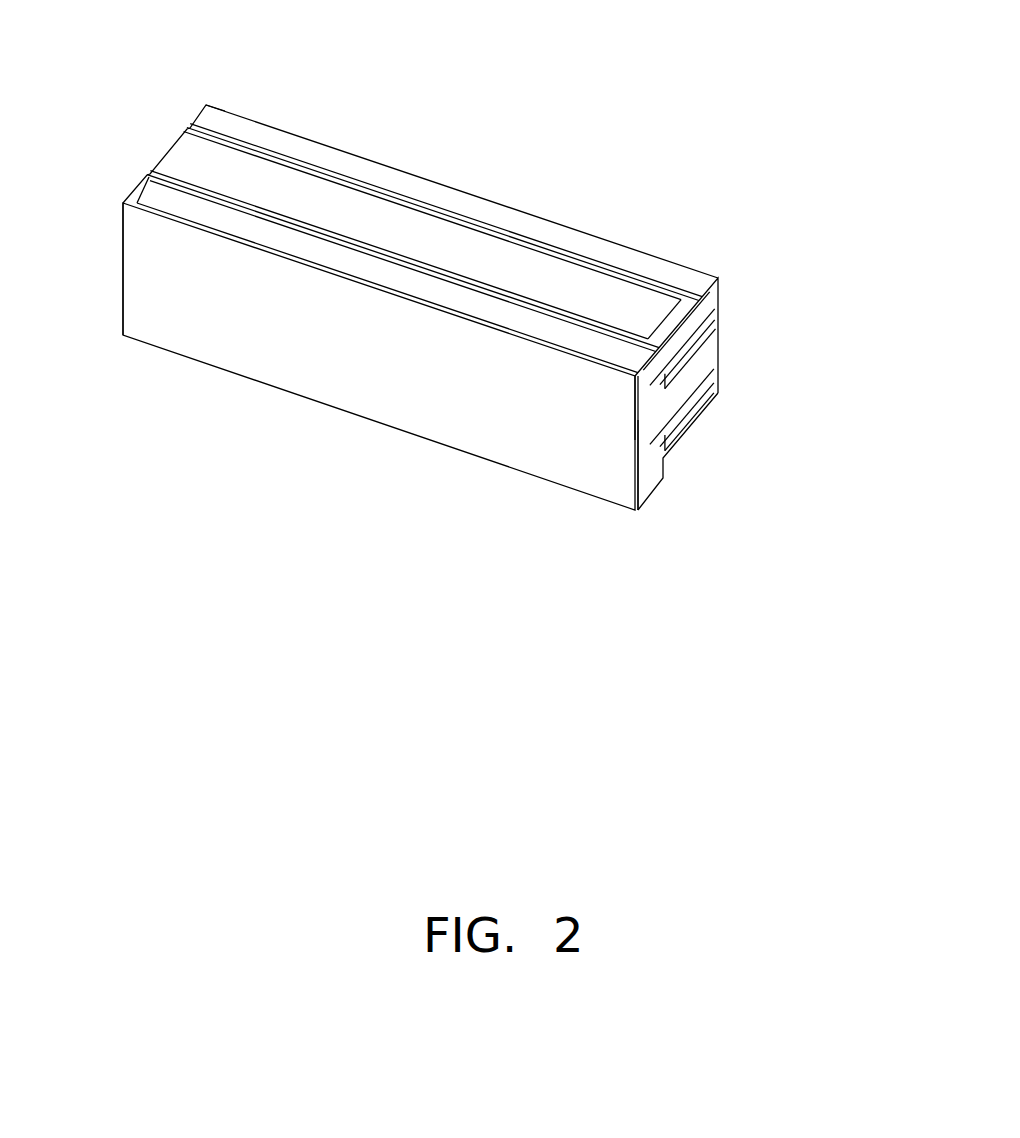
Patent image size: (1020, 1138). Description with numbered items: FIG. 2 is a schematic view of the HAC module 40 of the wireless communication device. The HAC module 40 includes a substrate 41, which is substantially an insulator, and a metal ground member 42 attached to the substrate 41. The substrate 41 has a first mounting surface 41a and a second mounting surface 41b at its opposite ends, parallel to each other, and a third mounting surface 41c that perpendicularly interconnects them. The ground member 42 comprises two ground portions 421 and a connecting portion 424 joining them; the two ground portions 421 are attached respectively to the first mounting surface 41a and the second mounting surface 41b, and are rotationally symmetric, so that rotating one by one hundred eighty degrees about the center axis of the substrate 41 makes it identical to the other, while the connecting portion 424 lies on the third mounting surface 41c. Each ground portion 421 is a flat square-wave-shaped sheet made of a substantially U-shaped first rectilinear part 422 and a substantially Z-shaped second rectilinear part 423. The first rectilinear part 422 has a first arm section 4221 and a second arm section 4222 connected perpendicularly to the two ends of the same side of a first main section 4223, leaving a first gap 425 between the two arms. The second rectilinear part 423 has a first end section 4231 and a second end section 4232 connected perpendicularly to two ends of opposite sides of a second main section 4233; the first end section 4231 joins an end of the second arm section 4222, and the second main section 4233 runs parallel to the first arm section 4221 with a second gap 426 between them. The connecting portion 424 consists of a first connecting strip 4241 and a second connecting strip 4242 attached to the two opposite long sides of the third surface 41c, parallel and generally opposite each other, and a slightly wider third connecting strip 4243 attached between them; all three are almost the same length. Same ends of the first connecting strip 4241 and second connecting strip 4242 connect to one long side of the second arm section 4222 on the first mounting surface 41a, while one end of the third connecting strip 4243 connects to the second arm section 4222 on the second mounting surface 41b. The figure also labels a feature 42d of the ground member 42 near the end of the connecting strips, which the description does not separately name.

The HAC module 40 is at (623, 60).
The substrate 41 is at (182, 323).
The first mounting surface 41a is at (670, 466).
The second mounting surface 41b is at (116, 253).
The third mounting surface 41c is at (205, 112).
The ground member 42 is at (584, 215).
The end wall of groove 42d is at (678, 302).
The ground portion 421 is at (878, 333).
The first rectilinear part 422 is at (812, 303).
The first arm section 4221 is at (695, 360).
The second arm section 4222 is at (712, 312).
The first main section 4223 is at (697, 340).
The second rectilinear part 423 is at (812, 382).
The first end section 4231 is at (705, 384).
The second end section 4232 is at (683, 440).
The second main section 4233 is at (690, 414).
The connecting portion 424 is at (560, 126).
The first connecting strip 4241 is at (238, 222).
The second connecting strip 4242 is at (474, 208).
The third connecting strip 4243 is at (360, 218).
The first gap 425 is at (640, 420).
The second gap 426 is at (642, 447).